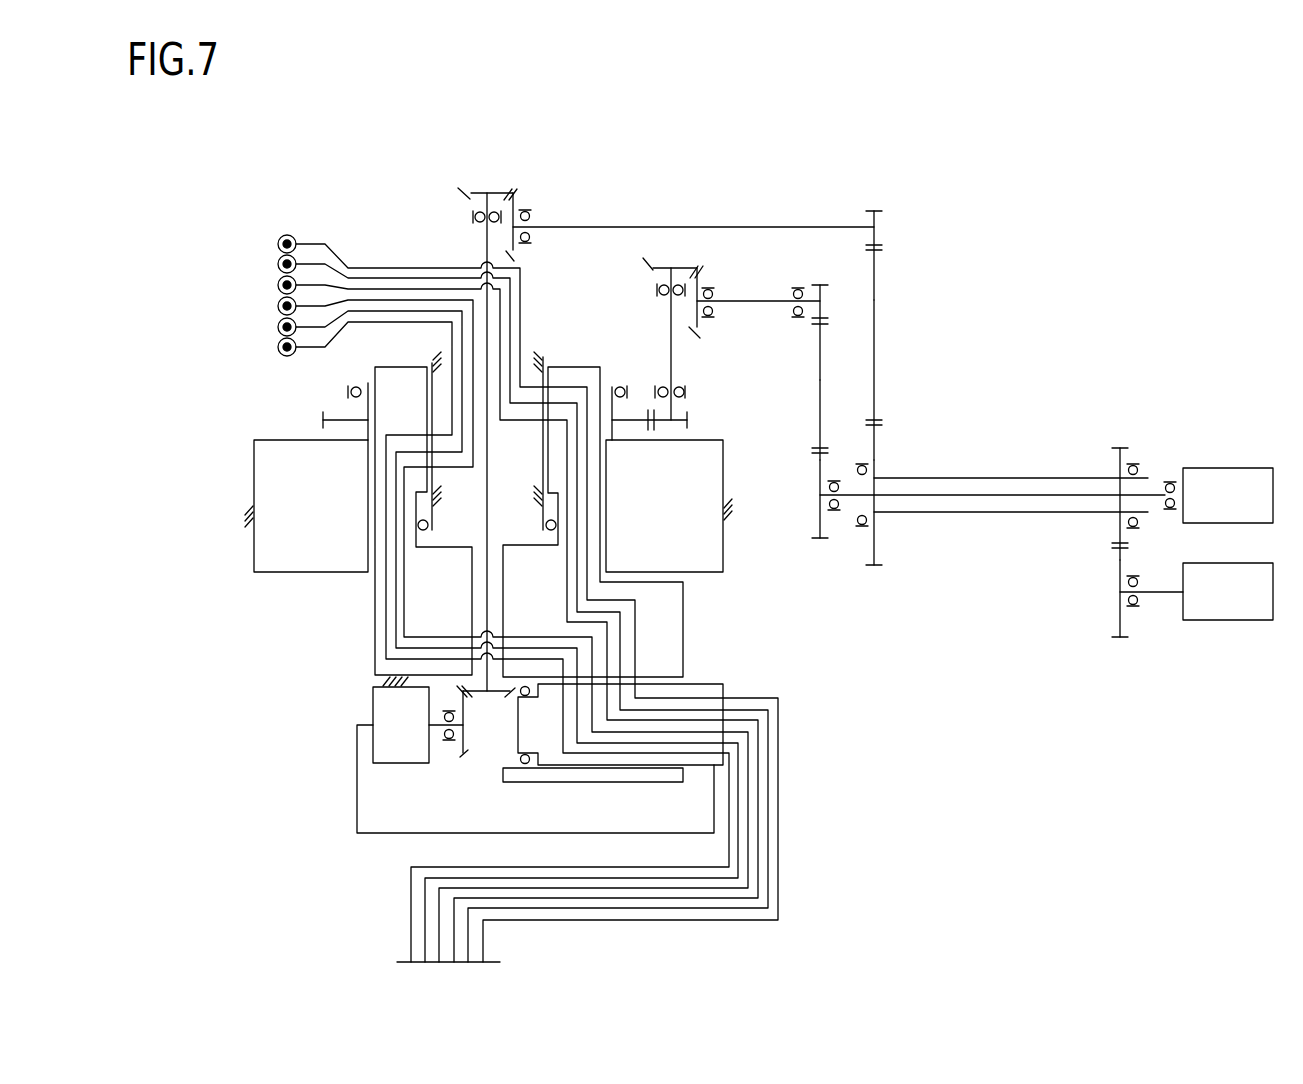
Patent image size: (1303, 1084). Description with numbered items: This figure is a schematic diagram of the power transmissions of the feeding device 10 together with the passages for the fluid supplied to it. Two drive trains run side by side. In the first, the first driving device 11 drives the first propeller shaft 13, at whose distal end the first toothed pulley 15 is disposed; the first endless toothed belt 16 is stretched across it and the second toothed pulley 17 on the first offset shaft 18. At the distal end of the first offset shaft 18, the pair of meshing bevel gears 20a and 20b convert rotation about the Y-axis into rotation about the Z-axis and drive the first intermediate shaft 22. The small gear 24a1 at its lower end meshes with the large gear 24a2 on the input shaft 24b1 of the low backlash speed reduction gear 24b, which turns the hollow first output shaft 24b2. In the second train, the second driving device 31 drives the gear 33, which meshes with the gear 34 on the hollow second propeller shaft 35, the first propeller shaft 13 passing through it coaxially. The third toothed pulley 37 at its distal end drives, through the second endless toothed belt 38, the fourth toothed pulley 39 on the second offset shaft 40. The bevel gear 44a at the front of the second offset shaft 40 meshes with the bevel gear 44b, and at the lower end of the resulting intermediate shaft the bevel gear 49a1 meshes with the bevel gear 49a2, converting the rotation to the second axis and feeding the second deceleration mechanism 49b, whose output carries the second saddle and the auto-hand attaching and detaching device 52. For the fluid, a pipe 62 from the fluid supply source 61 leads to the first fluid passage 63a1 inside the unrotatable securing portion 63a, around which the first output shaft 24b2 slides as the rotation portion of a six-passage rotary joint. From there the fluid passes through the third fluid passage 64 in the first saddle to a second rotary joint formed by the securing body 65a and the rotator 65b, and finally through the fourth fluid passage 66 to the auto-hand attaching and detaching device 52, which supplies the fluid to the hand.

The feeding device 10 is at (1245, 201).
The first driving device 11 is at (1220, 468).
The first propeller shaft 13 is at (1158, 490).
The first toothed pulley 15 is at (820, 468).
The first endless toothed belt 16 is at (820, 395).
The second toothed pulley 17 is at (822, 285).
The first offset shaft 18 is at (758, 301).
The bevel gear 20a is at (700, 278).
The bevel gear 20b is at (651, 266).
The first intermediate shaft 22 is at (671, 358).
The small gear 24a1 is at (687, 420).
The large gear 24a2 is at (323, 426).
The low backlash speed reduction gear 24b is at (723, 548).
The input shaft 24b1 is at (365, 405).
The first output shaft 24b2 is at (683, 617).
The second driving device 31 is at (1240, 620).
The gear 33 is at (1118, 608).
The gear 34 is at (1118, 528).
The second propeller shaft 35 is at (1010, 512).
The third toothed pulley 37 is at (876, 548).
The second endless toothed belt 38 is at (876, 360).
The fourth toothed pulley 39 is at (877, 237).
The second offset shaft 40 is at (665, 227).
The bevel gear 44a is at (516, 197).
The bevel gear 44b is at (473, 190).
The bevel gear 49a1 is at (478, 695).
The bevel gear 49a2 is at (462, 752).
The second deceleration mechanism 49b is at (373, 713).
The auto-hand attaching and detaching device 52 is at (397, 962).
The fluid supply source 61 is at (280, 240).
The pipe 62 is at (393, 268).
The securing portion 63a is at (430, 362).
The first fluid passage 63a1 is at (525, 330).
The third fluid passage 64 is at (375, 620).
The securing body 65a is at (622, 783).
The rotator 65b is at (713, 685).
The fourth fluid passage 66 is at (780, 850).